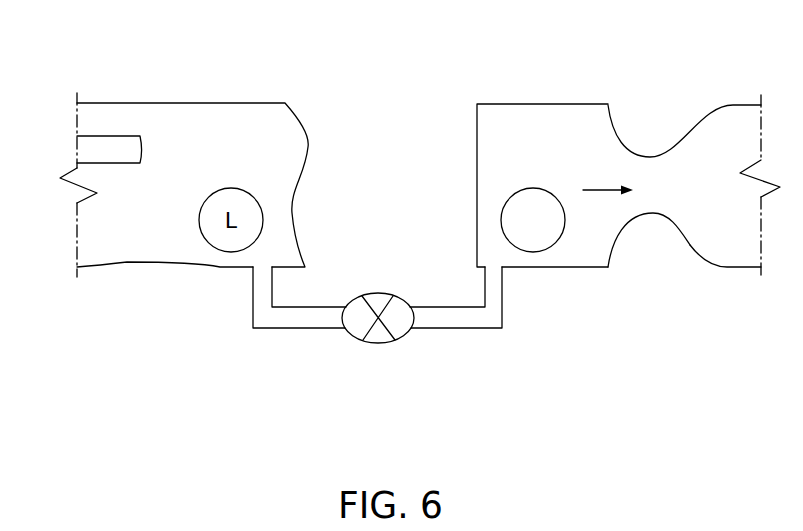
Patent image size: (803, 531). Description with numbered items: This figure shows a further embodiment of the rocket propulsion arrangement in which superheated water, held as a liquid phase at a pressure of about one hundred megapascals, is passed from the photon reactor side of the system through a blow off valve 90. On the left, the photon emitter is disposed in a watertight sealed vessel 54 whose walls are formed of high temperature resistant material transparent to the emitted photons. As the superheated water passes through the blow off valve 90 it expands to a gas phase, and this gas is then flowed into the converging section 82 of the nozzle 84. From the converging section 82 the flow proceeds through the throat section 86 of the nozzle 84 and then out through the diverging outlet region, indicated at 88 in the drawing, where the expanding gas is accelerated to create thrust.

The watertight sealed vessel 54 is at (120, 133).
The converging section 82 is at (615, 242).
The nozzle 84 is at (628, 176).
The throat section 86 is at (655, 157).
The diverging outlet wall 88 is at (737, 268).
The blow off valve 90 is at (377, 345).